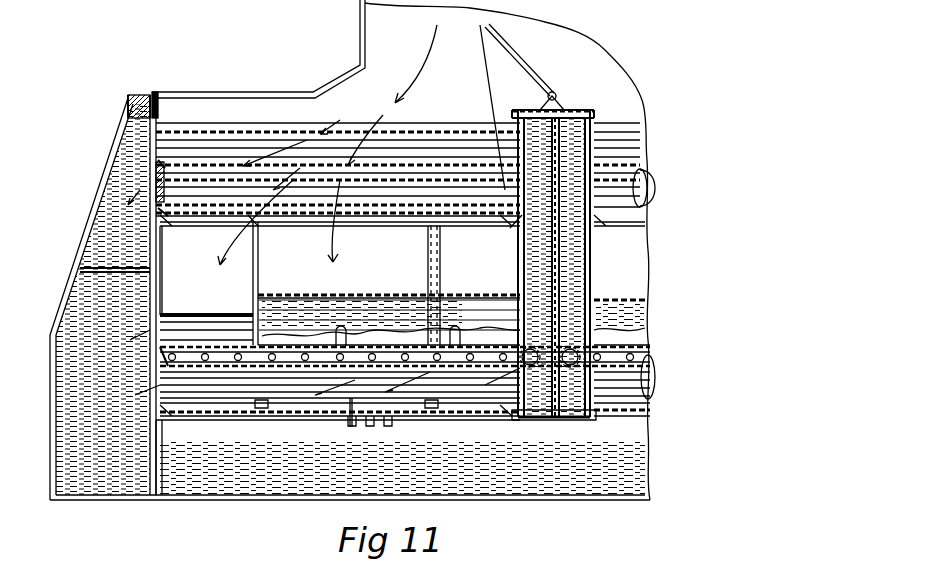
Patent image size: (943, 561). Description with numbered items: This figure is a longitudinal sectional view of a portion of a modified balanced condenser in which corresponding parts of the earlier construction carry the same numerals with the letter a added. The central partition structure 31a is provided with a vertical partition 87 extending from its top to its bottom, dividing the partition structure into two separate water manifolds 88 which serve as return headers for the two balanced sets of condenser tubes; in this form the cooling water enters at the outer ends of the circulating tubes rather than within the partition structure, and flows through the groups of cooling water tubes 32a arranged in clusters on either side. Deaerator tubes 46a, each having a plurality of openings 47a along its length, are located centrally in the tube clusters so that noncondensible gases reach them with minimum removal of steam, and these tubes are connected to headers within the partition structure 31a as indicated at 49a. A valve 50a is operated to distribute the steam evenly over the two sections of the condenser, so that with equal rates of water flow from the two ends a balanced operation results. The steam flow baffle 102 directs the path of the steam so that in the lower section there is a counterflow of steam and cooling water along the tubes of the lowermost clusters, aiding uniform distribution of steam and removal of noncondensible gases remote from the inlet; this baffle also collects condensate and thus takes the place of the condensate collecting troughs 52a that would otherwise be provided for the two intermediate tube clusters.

The valve 50a is at (526, 56).
The cooling water tube cluster 32a is at (422, 130).
The condensate collecting trough 52a is at (222, 226).
The opening 47a is at (340, 357).
The deaerator tube 46a is at (372, 357).
The steam flow baffle 102 is at (445, 297).
The vertical partition 87 is at (522, 254).
The water manifold 88 is at (554, 265).
The partition structure 31a is at (592, 244).
The deaerator tube connection 49a is at (572, 367).